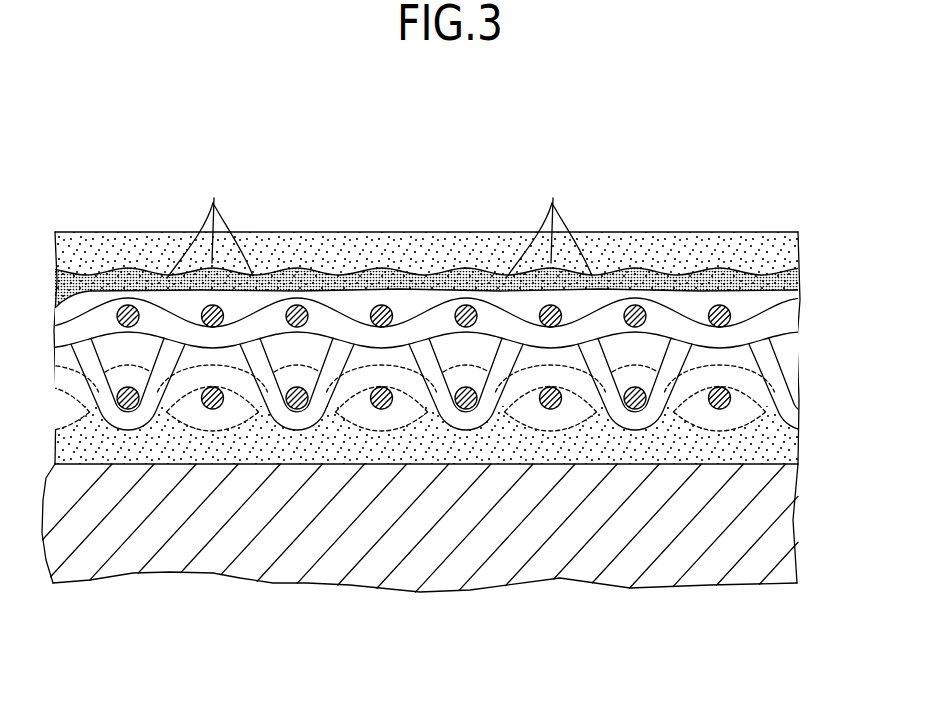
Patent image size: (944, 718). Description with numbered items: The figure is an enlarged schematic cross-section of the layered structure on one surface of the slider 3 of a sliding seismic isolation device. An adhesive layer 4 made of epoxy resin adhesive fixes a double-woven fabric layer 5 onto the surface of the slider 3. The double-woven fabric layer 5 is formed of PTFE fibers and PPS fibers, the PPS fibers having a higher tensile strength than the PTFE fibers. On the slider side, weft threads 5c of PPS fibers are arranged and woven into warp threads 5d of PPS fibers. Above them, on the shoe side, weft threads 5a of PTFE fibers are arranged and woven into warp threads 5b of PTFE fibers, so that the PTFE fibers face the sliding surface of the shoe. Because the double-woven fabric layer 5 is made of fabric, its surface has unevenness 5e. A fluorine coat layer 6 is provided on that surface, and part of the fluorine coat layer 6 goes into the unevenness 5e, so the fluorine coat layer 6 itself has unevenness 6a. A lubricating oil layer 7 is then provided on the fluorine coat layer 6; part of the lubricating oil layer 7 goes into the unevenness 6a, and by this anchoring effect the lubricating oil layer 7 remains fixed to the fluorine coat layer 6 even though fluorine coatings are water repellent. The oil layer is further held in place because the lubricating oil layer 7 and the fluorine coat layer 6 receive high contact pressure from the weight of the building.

The slider 3 is at (428, 548).
The adhesive layer 4 is at (680, 443).
The double-woven fabric layer 5 is at (778, 333).
The weft threads of PTFE fibers 5a is at (717, 303).
The warp threads of PTFE fibers 5b is at (165, 358).
The weft threads of PPS fibers 5c is at (180, 605).
The warp threads of PPS fibers 5d is at (333, 590).
The unevenness 5e is at (382, 275).
The fluorine coat layer 6 is at (446, 270).
The unevenness 6a is at (379, 225).
The lubricating oil layer 7 is at (757, 252).